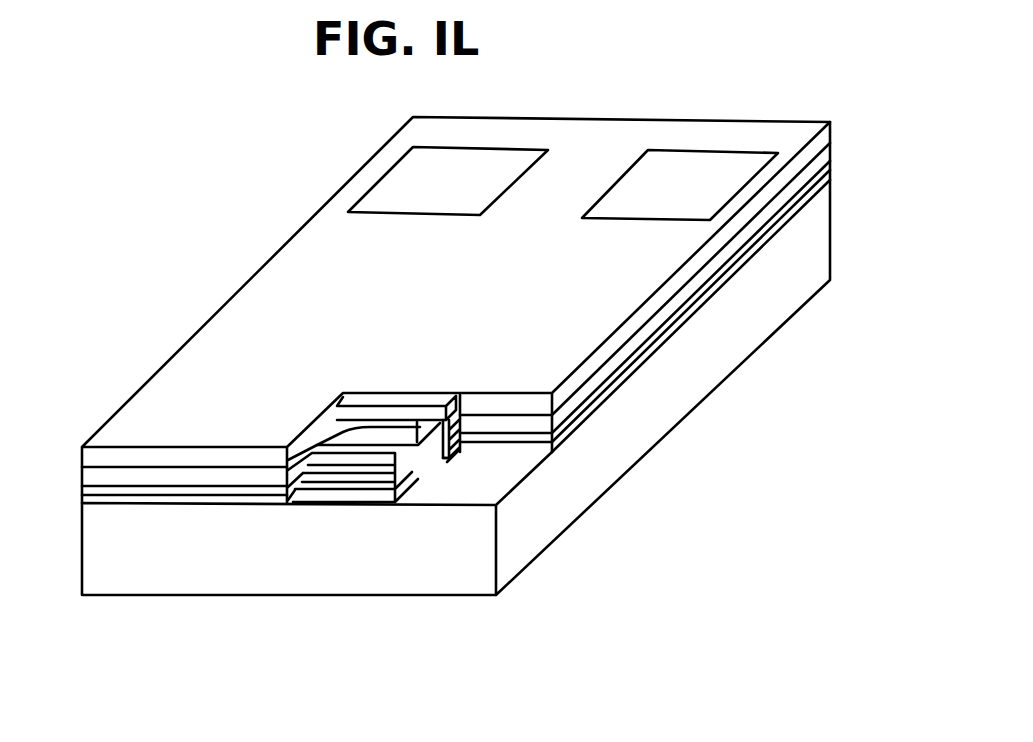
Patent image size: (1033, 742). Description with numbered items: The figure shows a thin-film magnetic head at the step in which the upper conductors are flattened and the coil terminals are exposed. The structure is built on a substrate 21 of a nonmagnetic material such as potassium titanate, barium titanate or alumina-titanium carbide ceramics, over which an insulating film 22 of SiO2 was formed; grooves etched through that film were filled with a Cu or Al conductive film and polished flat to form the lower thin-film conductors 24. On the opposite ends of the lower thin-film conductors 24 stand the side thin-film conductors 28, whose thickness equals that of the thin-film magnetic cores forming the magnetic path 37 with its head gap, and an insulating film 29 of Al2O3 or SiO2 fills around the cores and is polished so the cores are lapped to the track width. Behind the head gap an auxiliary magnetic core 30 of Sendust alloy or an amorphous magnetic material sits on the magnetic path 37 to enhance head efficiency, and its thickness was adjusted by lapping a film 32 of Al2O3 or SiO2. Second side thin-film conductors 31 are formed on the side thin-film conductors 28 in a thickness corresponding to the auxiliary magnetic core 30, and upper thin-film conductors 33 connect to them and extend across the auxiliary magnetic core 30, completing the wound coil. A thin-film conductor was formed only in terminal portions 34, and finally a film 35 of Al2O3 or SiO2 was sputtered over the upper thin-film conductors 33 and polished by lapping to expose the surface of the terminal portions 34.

The substrate 21 is at (680, 398).
The insulating film 22 is at (87, 498).
The insulating film 29 is at (87, 487).
The film 32 is at (90, 470).
The film 35 is at (127, 413).
The terminal portions 34 is at (415, 175).
The upper thin-film conductors 33 is at (417, 410).
The second side thin-film conductors 31 is at (455, 428).
The magnetic path 37 is at (365, 460).
The auxiliary magnetic core 30 is at (388, 432).
The side thin-film conductors 28 is at (460, 452).
The lower thin-film conductors 24 is at (447, 462).